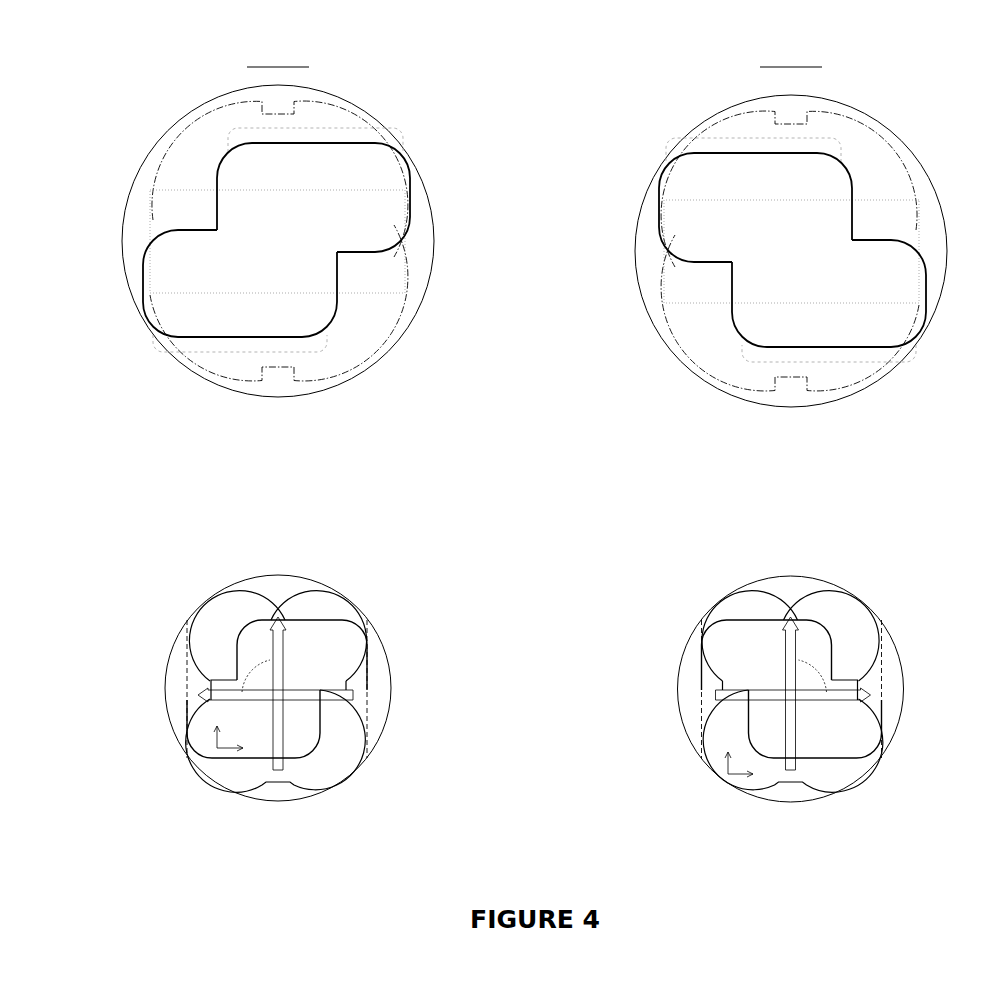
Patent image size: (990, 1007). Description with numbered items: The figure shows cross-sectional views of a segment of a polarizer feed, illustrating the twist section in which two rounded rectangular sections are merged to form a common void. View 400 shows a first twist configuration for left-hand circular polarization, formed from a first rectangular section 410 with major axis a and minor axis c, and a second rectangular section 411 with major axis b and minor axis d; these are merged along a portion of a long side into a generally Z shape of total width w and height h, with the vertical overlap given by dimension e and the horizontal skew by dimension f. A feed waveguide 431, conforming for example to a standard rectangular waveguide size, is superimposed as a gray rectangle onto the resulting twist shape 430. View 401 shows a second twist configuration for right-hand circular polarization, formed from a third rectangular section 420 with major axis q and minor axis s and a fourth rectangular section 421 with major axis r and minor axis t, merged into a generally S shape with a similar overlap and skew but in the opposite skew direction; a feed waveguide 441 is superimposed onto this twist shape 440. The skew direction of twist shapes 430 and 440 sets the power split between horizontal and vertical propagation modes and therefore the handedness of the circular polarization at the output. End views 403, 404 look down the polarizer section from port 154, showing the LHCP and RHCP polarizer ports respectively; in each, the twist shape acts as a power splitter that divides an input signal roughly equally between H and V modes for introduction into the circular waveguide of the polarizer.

The view 400 is at (90, 107).
The view 401 is at (674, 107).
The end view 403 is at (228, 567).
The end view 404 is at (740, 567).
The first rectangular section 410 is at (317, 128).
The second rectangular section 411 is at (240, 352).
The third rectangular section 420 is at (752, 138).
The fourth rectangular section 421 is at (832, 362).
The twist shape 430 is at (387, 163).
The feed waveguide 431 is at (388, 212).
The twist shape 440 is at (681, 173).
The feed waveguide 441 is at (681, 222).
The port 154 is at (380, 698).